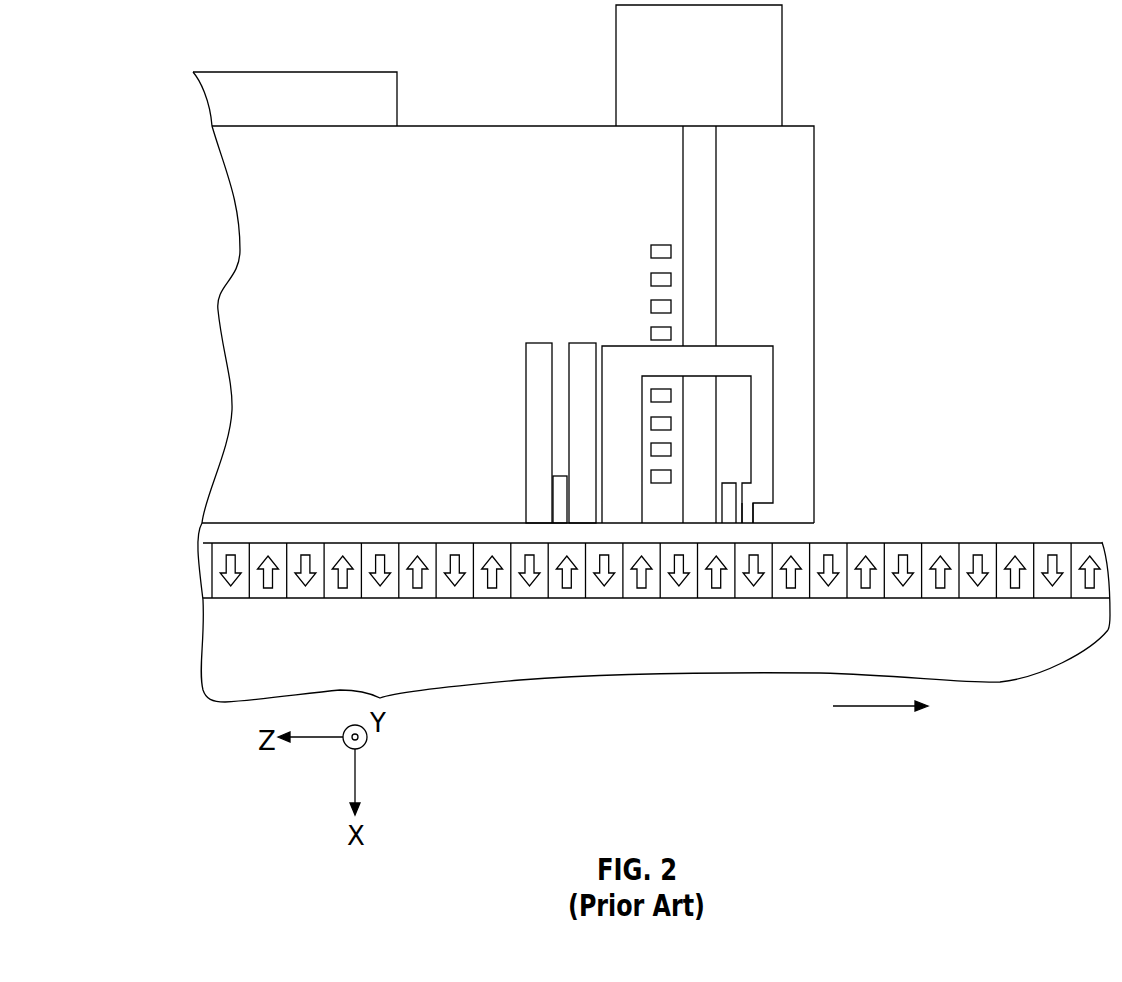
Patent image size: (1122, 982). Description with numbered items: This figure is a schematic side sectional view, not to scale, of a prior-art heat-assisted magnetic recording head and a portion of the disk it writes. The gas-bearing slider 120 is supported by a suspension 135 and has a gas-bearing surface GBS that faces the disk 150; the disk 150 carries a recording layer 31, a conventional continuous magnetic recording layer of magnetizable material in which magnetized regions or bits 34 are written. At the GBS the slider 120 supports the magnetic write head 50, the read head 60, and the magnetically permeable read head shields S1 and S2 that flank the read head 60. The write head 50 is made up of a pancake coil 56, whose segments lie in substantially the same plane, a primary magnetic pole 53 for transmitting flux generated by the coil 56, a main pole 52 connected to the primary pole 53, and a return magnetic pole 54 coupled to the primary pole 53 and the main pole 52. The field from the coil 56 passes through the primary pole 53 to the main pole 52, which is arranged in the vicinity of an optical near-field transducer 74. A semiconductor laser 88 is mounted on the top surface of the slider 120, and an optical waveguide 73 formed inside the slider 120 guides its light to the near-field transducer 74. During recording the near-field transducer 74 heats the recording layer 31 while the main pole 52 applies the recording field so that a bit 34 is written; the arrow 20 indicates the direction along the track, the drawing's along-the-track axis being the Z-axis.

The gas-bearing slider 120 is at (247, 408).
The suspension 135 is at (322, 90).
The semiconductor laser 88 is at (767, 64).
The optical waveguide 73 is at (698, 282).
The magnetic write head 50 is at (612, 279).
The coil 56 is at (648, 250).
The read head shield S1 is at (540, 435).
The read head shield S2 is at (585, 345).
The read head 60 is at (556, 508).
The return magnetic pole 54 is at (623, 356).
The primary magnetic pole 53 is at (752, 395).
The optical near-field transducer 74 is at (728, 483).
The main pole 52 is at (748, 516).
The gas-bearing surface GBS is at (795, 529).
The recording layer 31 is at (605, 557).
The bit 34 is at (1050, 553).
The disk 150 is at (980, 668).
The direction of media motion 20 is at (870, 708).